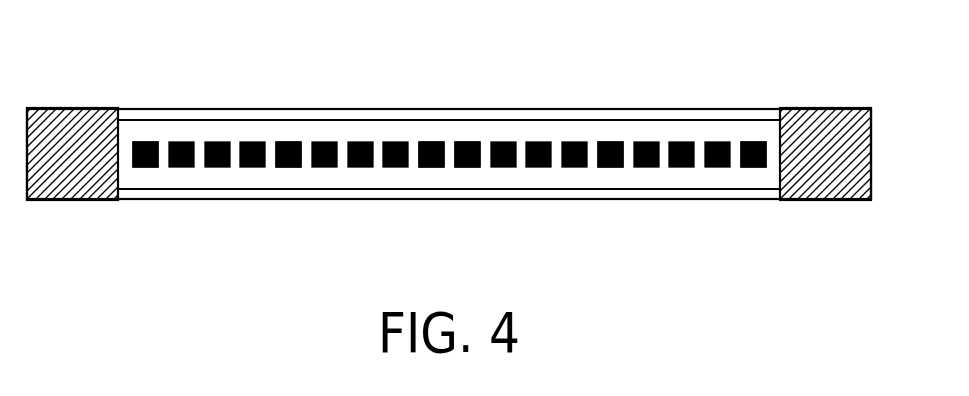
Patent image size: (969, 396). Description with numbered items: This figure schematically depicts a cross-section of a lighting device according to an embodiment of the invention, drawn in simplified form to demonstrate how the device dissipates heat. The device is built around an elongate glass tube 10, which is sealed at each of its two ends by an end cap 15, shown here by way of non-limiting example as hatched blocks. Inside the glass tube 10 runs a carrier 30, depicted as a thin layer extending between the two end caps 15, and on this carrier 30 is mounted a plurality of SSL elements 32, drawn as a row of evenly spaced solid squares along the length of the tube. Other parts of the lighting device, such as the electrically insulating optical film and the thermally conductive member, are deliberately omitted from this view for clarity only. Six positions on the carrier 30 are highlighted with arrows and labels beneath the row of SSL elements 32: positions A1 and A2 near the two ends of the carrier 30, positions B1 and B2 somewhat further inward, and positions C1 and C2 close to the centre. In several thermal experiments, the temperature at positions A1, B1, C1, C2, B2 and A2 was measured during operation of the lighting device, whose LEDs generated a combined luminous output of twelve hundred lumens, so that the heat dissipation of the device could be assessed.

The glass tube 10 is at (312, 109).
The end caps 15 is at (76, 137).
The carrier 30 is at (558, 132).
The SSL elements 32 is at (430, 142).
The position A1 is at (145, 184).
The position B1 is at (288, 184).
The position C1 is at (431, 184).
The position C2 is at (467, 184).
The position B2 is at (610, 184).
The position A2 is at (753, 184).